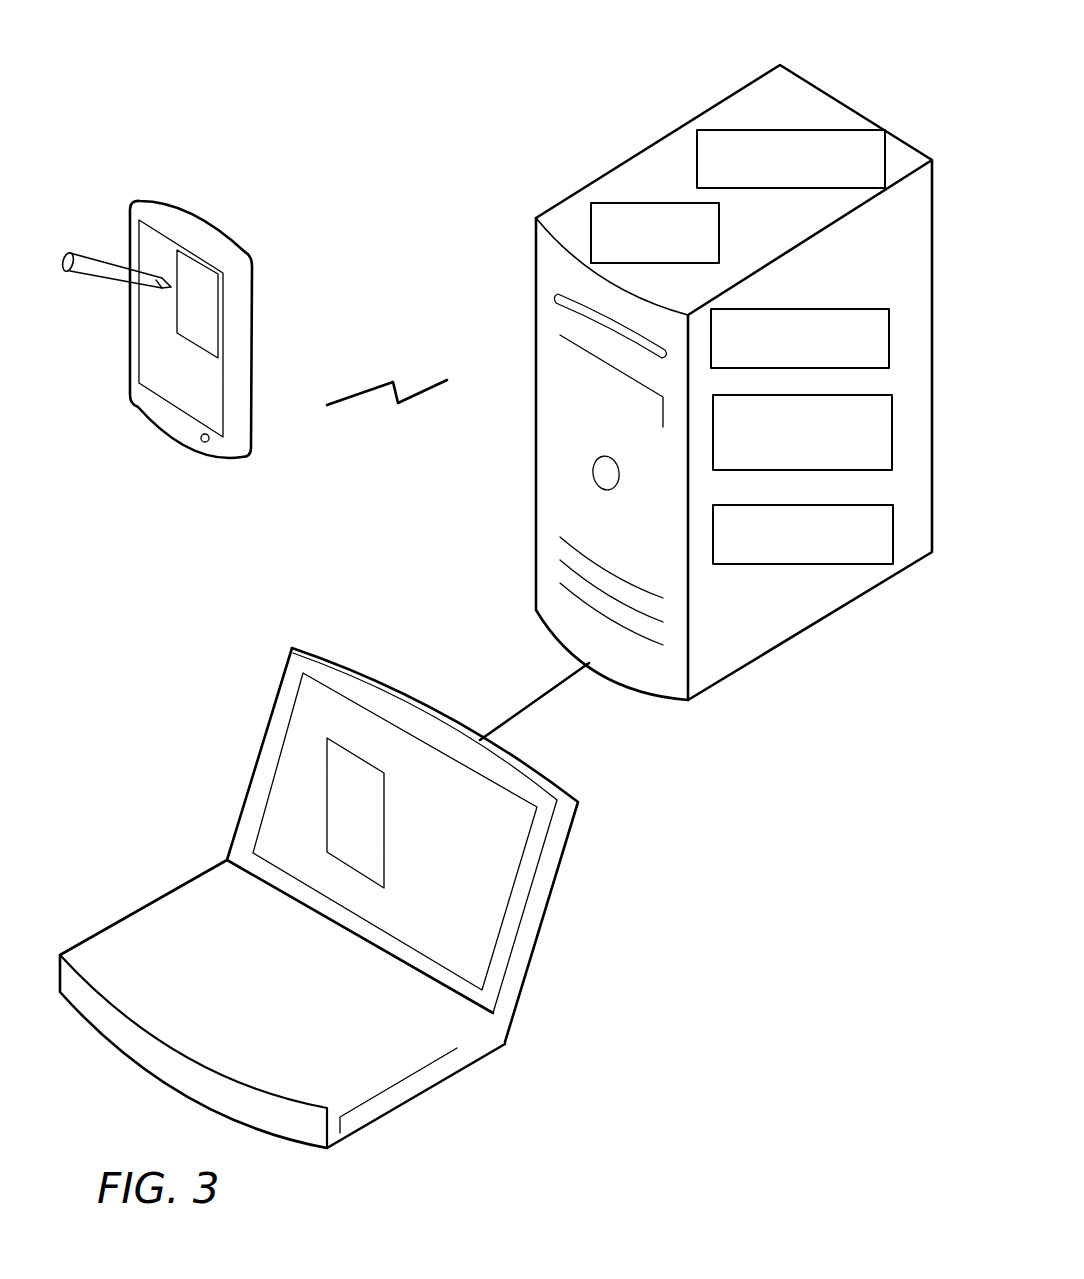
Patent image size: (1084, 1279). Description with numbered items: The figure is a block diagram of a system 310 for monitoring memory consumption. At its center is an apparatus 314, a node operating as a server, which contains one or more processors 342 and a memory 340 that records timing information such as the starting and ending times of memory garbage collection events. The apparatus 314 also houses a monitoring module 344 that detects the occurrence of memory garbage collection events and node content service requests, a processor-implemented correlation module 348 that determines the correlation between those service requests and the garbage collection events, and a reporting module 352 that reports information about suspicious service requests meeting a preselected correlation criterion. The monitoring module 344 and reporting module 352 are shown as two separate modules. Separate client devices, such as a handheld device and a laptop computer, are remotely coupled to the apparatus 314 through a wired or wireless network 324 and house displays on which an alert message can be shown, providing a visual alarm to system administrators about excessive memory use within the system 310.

The system 310 is at (208, 86).
The apparatus 314 is at (817, 85).
The network 324 is at (399, 403).
The memory 340 is at (619, 202).
The processor(s) 342 is at (725, 128).
The monitoring module 344 is at (801, 308).
The correlation module 348 is at (803, 395).
The reporting module 352 is at (802, 505).